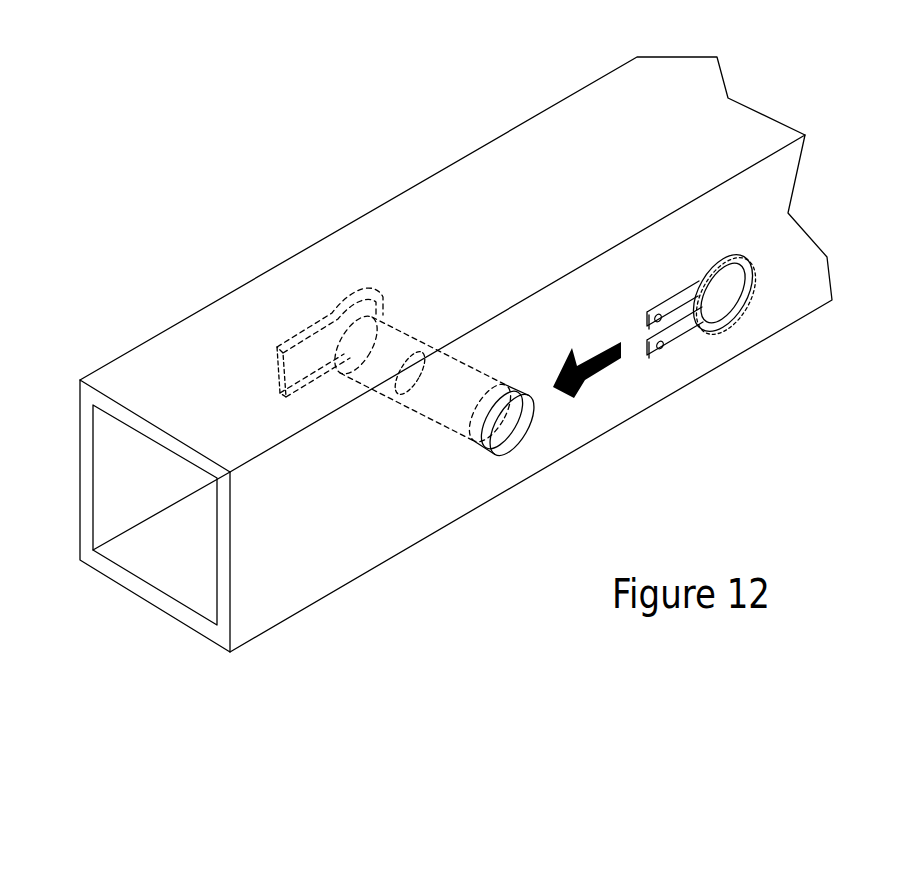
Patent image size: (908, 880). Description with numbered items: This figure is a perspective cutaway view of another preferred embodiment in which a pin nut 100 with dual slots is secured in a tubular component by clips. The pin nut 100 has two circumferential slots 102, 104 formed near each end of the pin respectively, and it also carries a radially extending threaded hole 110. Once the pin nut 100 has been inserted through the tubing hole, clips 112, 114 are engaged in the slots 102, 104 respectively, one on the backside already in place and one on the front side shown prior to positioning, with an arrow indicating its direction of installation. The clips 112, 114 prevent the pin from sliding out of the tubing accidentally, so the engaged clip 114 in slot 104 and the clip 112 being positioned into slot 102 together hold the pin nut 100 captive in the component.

The pin nut 100 is at (380, 333).
The circumferential slot 102 is at (467, 433).
The circumferential slot 104 is at (327, 303).
The radially extending threaded hole 110 is at (407, 400).
The clip 112 is at (707, 335).
The clip 114 is at (280, 352).